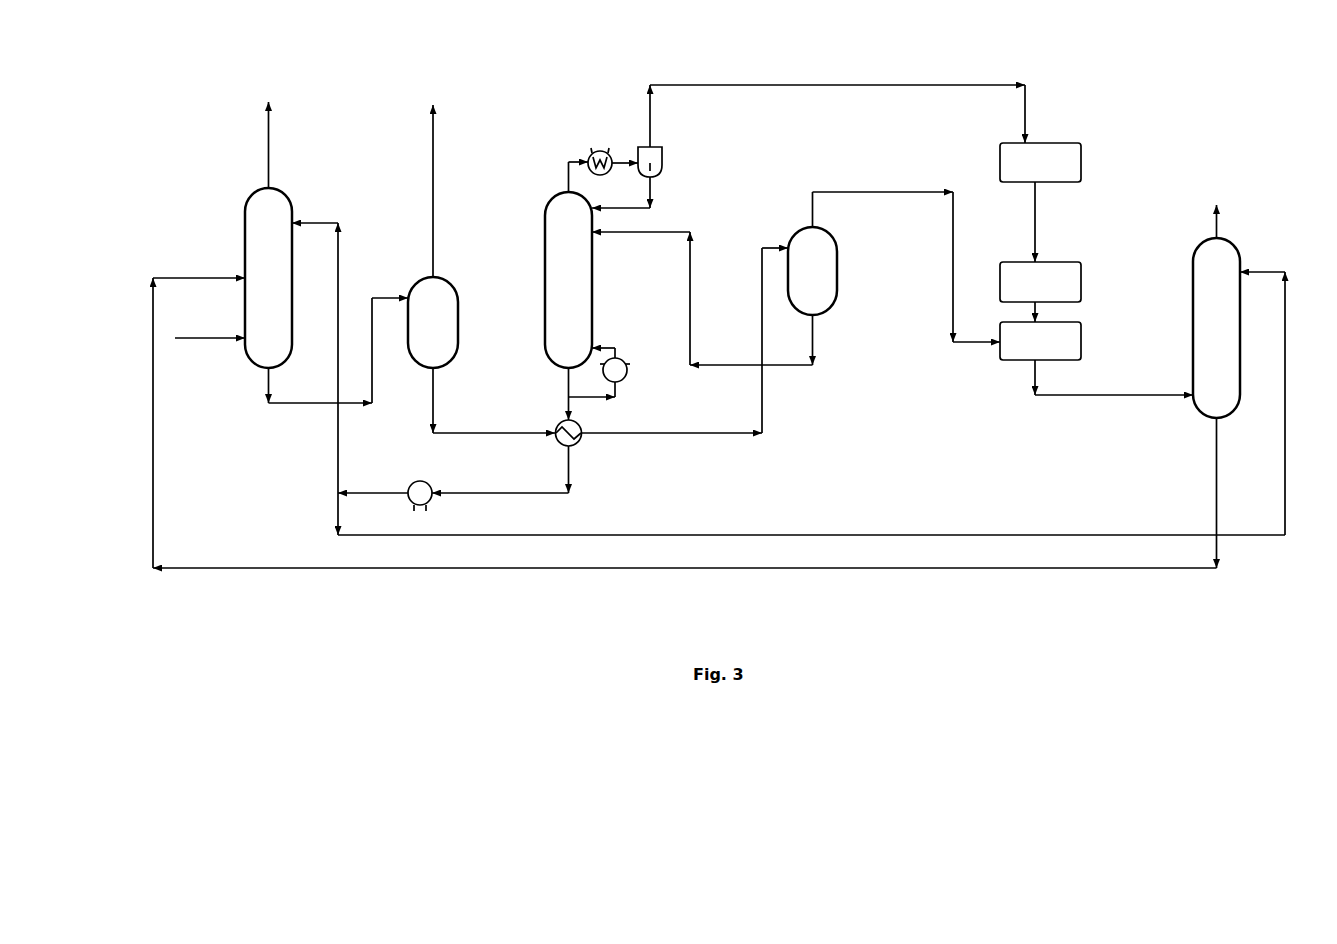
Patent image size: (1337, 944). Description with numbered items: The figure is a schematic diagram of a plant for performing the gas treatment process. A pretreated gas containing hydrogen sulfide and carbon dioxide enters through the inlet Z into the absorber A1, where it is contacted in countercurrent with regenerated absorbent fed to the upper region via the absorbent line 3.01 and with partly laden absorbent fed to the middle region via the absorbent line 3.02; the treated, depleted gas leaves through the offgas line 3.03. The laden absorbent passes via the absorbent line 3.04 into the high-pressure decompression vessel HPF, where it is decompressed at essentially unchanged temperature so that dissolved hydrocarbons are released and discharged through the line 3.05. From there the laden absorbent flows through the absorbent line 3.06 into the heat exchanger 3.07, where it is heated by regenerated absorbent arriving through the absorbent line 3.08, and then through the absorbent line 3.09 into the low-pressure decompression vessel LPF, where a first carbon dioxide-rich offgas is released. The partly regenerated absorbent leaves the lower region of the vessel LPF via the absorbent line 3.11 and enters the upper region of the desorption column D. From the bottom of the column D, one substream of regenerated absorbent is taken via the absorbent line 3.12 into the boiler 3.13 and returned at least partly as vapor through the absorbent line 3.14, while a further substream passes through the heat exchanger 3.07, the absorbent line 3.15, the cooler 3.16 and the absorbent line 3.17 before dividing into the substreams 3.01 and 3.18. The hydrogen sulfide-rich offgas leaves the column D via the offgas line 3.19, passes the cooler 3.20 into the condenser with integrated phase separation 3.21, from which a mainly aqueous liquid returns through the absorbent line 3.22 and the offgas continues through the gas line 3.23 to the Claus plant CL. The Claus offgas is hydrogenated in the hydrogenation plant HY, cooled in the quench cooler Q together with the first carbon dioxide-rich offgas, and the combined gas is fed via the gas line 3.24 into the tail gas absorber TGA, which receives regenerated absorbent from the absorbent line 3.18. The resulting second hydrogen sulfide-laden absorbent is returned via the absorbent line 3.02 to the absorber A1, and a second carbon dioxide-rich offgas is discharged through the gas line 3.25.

The absorbent line 3.01 is at (318, 221).
The absorbent line 3.02 is at (533, 572).
The offgas line 3.03 is at (268, 140).
The absorbent line 3.04 is at (277, 407).
The line 3.05 is at (433, 137).
The absorbent line 3.06 is at (438, 393).
The heat exchanger 3.07 is at (583, 440).
The absorbent line 3.08 is at (566, 385).
The absorbent line 3.09 is at (768, 432).
The absorbent line 3.11 is at (808, 368).
The absorbent line 3.12 is at (608, 400).
The boiler 3.13 is at (625, 360).
The absorbent line 3.14 is at (610, 345).
The absorbent line 3.15 is at (548, 496).
The cooler 3.16 is at (420, 481).
The absorbent line 3.17 is at (370, 492).
The absorbent line 3.18 is at (857, 535).
The offgas line 3.19 is at (573, 162).
The cooler 3.20 is at (600, 150).
The condenser with integrated phase separation 3.21 is at (663, 153).
The absorbent line 3.22 is at (652, 193).
The gas line 3.23 is at (677, 85).
The gas line 3.24 is at (1128, 398).
The gas line 3.25 is at (1218, 226).
The absorber A1 is at (248, 362).
The inlet Z is at (200, 338).
The high-pressure decompression vessel HPF is at (452, 278).
The desorption column D is at (545, 270).
The low-pressure decompression vessel LPF is at (790, 300).
The Claus plant CL is at (1058, 143).
The hydrogenation plant HY is at (1062, 261).
The quench cooler Q is at (1083, 342).
The tail gas absorber TGA is at (1192, 248).